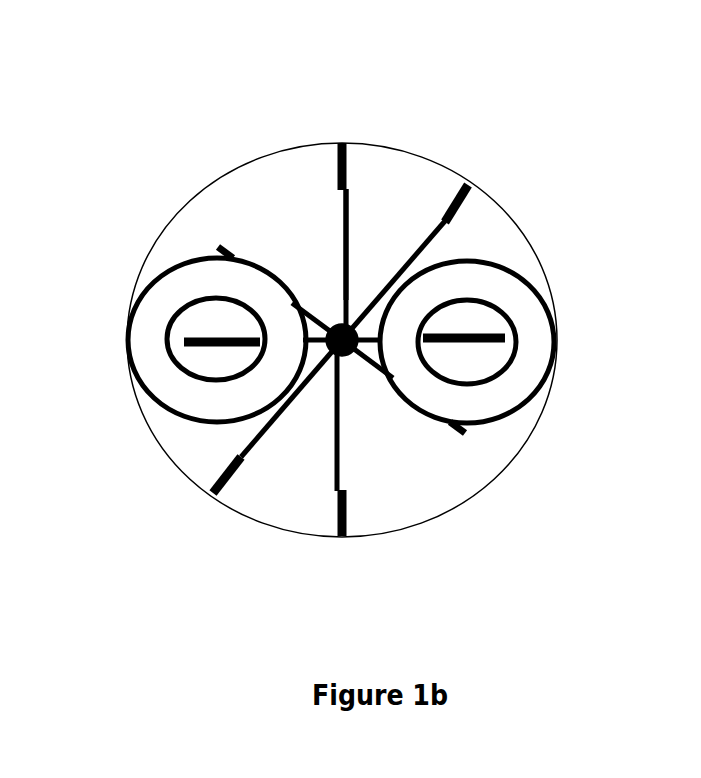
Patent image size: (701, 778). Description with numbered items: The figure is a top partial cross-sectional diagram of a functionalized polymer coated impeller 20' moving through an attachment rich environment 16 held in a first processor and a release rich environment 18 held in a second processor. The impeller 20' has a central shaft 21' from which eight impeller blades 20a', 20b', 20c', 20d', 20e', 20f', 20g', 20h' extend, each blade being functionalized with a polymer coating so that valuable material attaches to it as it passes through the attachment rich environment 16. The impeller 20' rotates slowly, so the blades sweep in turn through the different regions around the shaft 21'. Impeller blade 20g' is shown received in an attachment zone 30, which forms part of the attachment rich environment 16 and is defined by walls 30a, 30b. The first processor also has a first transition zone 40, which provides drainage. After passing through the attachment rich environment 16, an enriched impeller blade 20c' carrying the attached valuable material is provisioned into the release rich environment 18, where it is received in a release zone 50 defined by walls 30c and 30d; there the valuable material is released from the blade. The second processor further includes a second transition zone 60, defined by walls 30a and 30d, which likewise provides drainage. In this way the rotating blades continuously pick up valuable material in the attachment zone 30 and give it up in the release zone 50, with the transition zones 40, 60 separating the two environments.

The attachment rich environment 16 is at (192, 245).
The release rich environment 18 is at (457, 447).
The functionalized polymer coated impeller 20' is at (296, 264).
The impeller blade 20a' is at (151, 391).
The impeller blade 20b' is at (204, 417).
The enriched impeller blade 20c' is at (403, 451).
The impeller blade 20d' is at (528, 426).
The impeller blade 20e' is at (531, 361).
The impeller blade 20f' is at (476, 280).
The impeller blade 20g' is at (279, 186).
The impeller blade 20h' is at (195, 188).
The shaft 21' is at (357, 299).
The attachment zone 30 is at (283, 201).
The wall 30a is at (341, 165).
The wall 30b is at (238, 458).
The wall 30c is at (348, 508).
The wall 30d is at (457, 210).
The first transition zone 40 is at (278, 493).
The release zone 50 is at (399, 472).
The second transition zone 60 is at (407, 175).